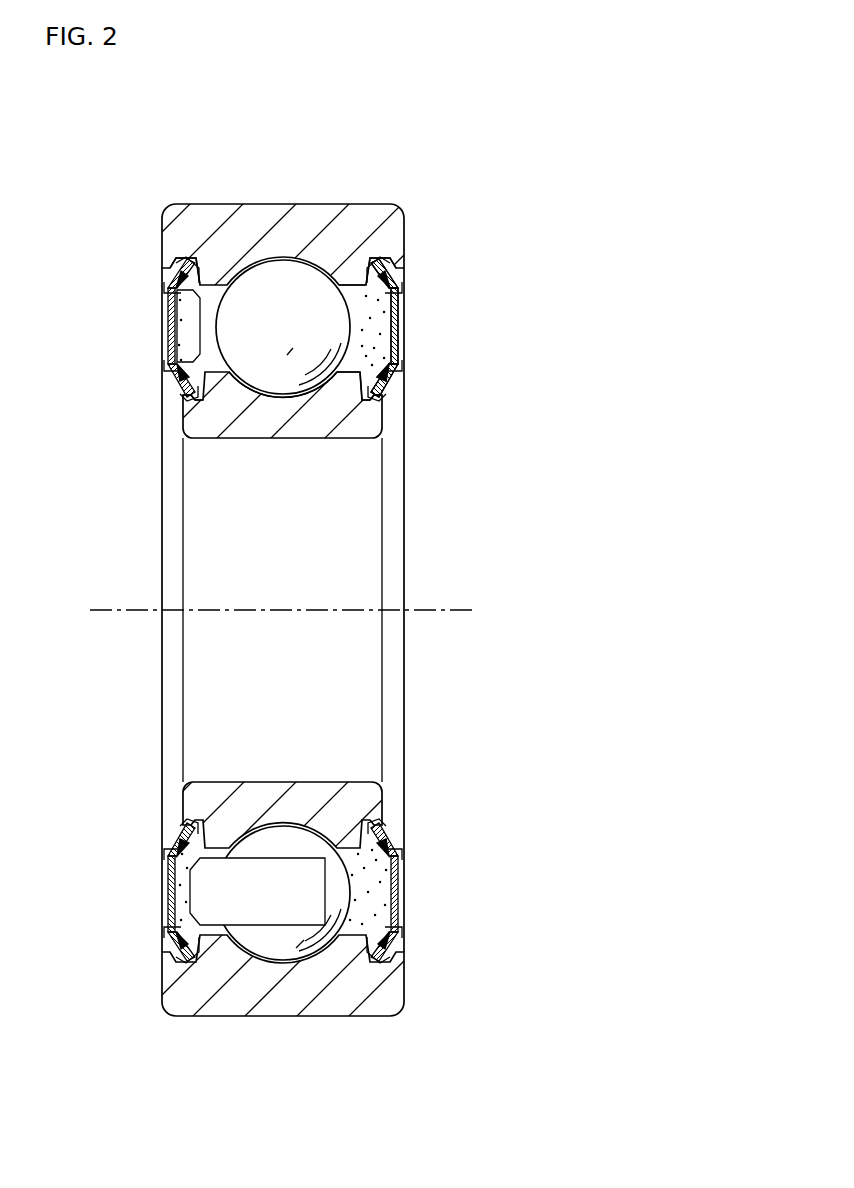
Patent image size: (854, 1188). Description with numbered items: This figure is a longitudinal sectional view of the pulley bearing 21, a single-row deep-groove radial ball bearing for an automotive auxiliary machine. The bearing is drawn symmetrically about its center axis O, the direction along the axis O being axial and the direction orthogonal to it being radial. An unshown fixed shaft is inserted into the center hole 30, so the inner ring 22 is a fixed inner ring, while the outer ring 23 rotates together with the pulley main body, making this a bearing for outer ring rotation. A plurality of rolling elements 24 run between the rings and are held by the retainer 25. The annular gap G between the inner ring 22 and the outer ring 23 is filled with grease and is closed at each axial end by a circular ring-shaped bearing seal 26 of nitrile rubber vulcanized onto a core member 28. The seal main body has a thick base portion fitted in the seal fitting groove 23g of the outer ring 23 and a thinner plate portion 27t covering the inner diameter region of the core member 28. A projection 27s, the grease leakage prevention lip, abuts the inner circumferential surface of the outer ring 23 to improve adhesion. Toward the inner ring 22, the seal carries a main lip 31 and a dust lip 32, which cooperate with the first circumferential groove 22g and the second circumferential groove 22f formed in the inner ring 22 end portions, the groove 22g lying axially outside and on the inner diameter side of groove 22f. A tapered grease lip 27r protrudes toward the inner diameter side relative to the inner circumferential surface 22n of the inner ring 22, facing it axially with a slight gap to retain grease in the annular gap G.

The pulley bearing 21 is at (414, 153).
The inner ring 22 is at (405, 404).
The second circumferential groove 22f is at (356, 370).
The first circumferential groove 22g is at (388, 405).
The inner circumferential surface 22n is at (188, 357).
The outer ring 23 is at (404, 207).
The seal fitting groove 23g is at (185, 262).
The rolling elements 24 is at (275, 256).
The retainer 25 is at (200, 318).
The bearing seal 26 is at (168, 330).
The projection 27s is at (352, 290).
The grease lip 27r is at (370, 372).
The plate portion 27t is at (387, 292).
The core member 28 is at (393, 308).
The center hole 30 is at (233, 440).
The main lip 31 is at (382, 398).
The dust lip 32 is at (395, 388).
The annular gap G is at (376, 341).
The axis O is at (292, 610).